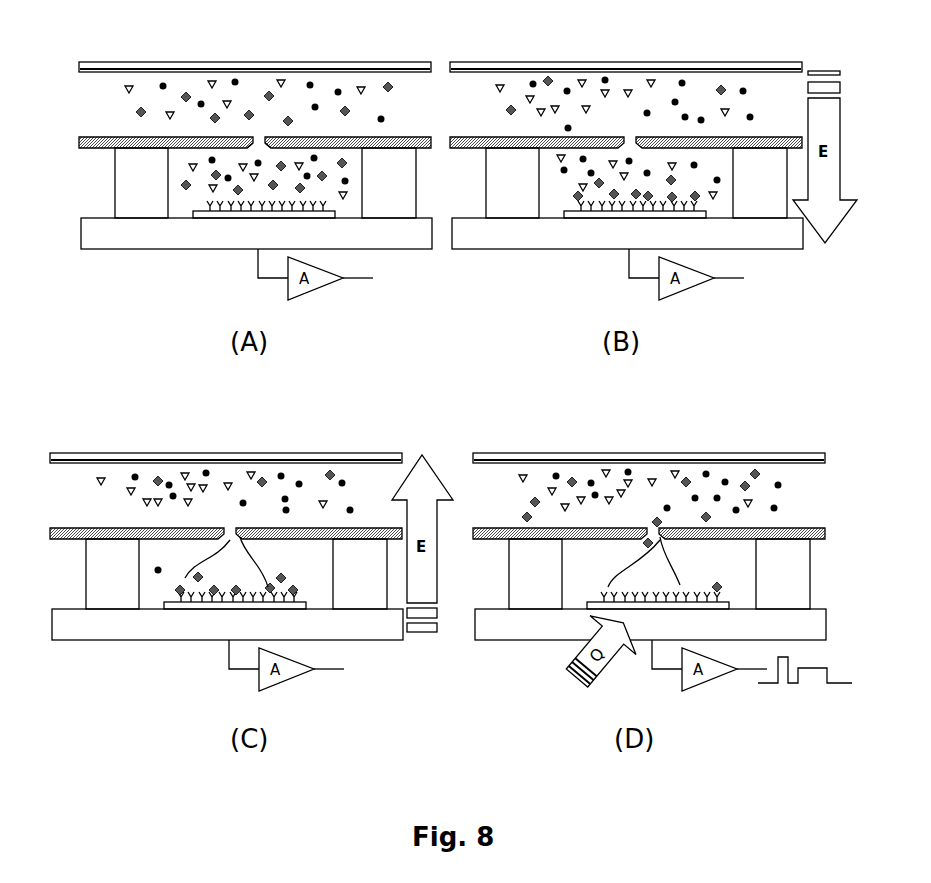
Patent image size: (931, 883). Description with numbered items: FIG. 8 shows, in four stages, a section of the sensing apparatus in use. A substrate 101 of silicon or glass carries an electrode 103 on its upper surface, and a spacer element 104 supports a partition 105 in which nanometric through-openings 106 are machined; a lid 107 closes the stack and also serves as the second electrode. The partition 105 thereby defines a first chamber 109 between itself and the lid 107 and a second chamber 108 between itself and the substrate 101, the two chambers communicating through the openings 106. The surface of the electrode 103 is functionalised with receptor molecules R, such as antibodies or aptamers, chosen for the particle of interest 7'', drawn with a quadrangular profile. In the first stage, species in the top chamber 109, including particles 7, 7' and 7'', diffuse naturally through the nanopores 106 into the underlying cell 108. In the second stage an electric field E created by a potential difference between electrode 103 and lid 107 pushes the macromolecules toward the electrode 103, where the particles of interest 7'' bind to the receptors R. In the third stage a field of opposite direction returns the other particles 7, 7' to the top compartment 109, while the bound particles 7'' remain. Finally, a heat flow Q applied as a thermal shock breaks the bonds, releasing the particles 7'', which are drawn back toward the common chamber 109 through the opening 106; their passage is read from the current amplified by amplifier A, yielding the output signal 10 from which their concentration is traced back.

The particle 7 is at (356, 68).
The particle 7' is at (378, 67).
The particle of interest 7'' is at (404, 66).
The output signal 10 is at (760, 684).
The substrate 101 is at (120, 250).
The electrode 103 is at (245, 220).
The spacer element 104 is at (115, 180).
The partition 105 is at (79, 140).
The through-opening 106 is at (262, 138).
The lid 107 is at (163, 62).
The second chamber 108 is at (177, 178).
The first chamber 109 is at (98, 102).
The receptor molecule R is at (222, 213).